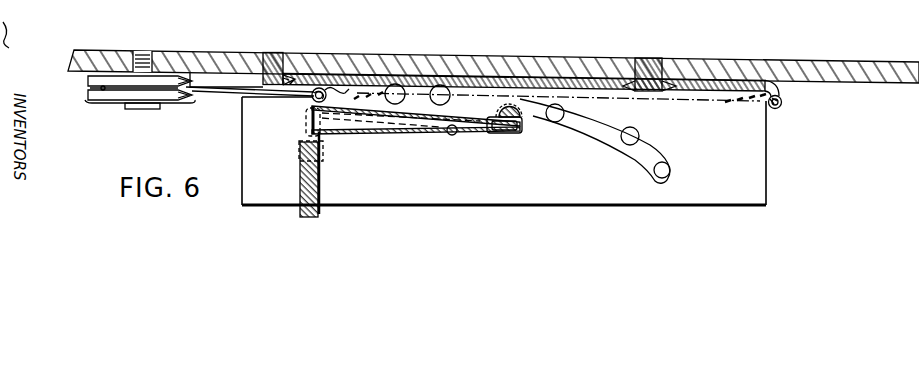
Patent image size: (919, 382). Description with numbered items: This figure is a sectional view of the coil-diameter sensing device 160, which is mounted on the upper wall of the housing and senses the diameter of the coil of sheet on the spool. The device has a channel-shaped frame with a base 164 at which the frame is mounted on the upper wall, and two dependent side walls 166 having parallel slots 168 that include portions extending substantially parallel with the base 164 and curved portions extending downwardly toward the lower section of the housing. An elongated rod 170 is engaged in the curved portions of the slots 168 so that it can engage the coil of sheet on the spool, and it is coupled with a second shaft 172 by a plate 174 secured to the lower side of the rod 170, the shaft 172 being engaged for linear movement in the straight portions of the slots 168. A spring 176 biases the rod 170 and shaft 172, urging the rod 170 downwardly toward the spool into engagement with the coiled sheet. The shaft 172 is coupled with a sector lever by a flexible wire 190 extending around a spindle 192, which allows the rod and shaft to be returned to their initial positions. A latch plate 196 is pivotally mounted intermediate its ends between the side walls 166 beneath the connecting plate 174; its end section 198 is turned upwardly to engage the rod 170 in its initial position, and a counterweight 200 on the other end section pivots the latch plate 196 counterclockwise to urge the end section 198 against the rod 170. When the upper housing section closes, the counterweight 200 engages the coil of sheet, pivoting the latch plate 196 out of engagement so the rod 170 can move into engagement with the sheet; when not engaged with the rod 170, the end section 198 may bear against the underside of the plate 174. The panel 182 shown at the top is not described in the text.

The device 160 is at (519, 169).
The base 164 is at (710, 90).
The side walls 166 is at (627, 192).
The slots 168 is at (613, 143).
The rod 170 is at (484, 135).
The second shaft 172 is at (312, 96).
The plate 174 is at (377, 112).
The spring 176 is at (752, 103).
The door panel 182 is at (332, 55).
The wire 190 is at (236, 97).
The spindle 192 is at (108, 96).
The latch plate 196 is at (444, 137).
The end section 198 is at (530, 123).
The counterweight 200 is at (299, 188).